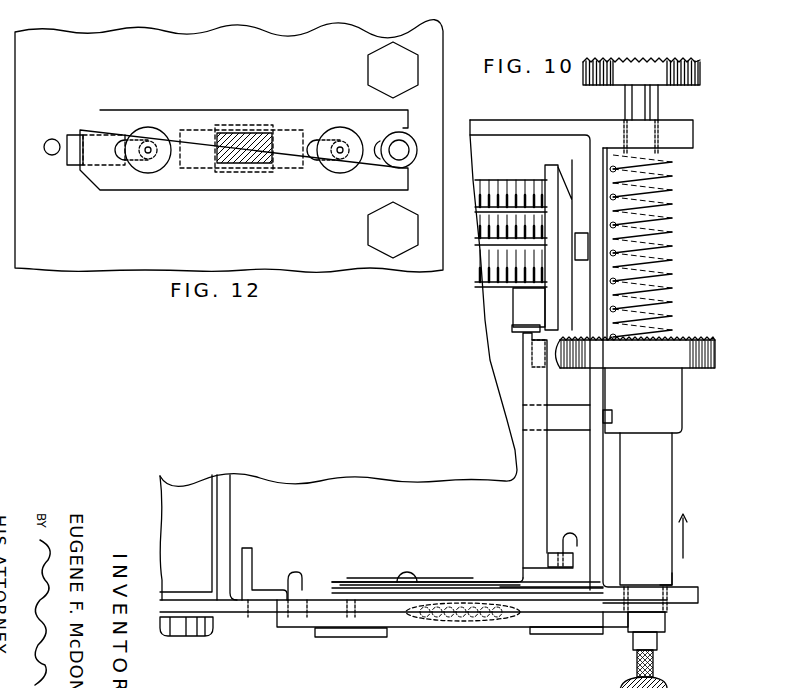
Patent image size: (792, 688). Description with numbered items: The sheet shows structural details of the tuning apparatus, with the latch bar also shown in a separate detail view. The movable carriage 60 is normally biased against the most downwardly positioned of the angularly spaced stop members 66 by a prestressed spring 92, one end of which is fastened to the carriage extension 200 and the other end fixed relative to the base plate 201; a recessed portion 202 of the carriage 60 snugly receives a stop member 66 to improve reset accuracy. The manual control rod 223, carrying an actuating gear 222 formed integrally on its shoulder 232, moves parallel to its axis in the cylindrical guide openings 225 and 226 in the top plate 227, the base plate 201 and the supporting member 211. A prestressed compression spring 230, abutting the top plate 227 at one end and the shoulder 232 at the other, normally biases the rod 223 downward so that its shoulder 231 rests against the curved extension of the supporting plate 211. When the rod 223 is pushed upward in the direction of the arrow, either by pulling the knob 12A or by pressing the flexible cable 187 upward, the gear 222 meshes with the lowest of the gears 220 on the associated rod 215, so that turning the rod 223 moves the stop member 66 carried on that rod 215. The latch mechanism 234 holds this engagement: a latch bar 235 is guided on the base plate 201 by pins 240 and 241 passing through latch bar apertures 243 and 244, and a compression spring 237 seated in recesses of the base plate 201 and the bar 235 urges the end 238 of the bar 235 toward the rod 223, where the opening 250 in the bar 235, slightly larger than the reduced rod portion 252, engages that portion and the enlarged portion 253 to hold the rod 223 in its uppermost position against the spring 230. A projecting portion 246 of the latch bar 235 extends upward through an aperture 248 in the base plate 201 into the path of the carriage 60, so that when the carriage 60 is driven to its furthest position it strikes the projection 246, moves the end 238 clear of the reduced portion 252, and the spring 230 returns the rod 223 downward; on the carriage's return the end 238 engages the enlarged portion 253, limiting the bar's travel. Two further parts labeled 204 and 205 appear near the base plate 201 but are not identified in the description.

In FIG. 10, the knob 12A is at (665, 57).
In FIG. 10, the cylindrical guide opening 225 is at (623, 120).
In FIG. 10, the top plate 227 is at (683, 127).
In FIG. 10, the gears 220 is at (571, 165).
In FIG. 10, the compression spring 230 is at (665, 259).
In FIG. 10, the actuating gear 222 is at (690, 338).
In FIG. 10, the shoulder 232 is at (740, 345).
In FIG. 10, the rod 215 is at (497, 288).
In FIG. 10, the stop member 66 is at (530, 330).
In FIG. 10, the recessed portion 202 is at (532, 360).
In FIG. 10, the movable carriage 60 is at (542, 466).
In FIG. 10, the supporting member 211 is at (593, 478).
In FIG. 10, the carriage extension 200 is at (558, 552).
In FIG. 10, the control rod 223 is at (663, 502).
In FIG. 10, the shoulder 231 is at (673, 583).
In FIG. 10, the cylindrical guide opening 226 is at (666, 618).
In FIG. 10, the enlarged portion 253 is at (658, 636).
In FIG. 10, the reduced portion 252 is at (653, 658).
In FIG. 10, the flexible cable 187 is at (657, 673).
In FIG. 10, the projecting portion 246 is at (247, 577).
In FIG. 10, the base plate 201 is at (333, 588).
In FIG. 10, the plate stack 204 is at (358, 578).
In FIG. 10, the dome contact 205 is at (409, 573).
In FIG. 10, the prestressed spring 92 is at (333, 590).
In FIG. 10, the aperture 248 is at (262, 612).
In FIG. 10, the pin 240 is at (345, 633).
In FIG. 10, the latch bar 235 is at (394, 622).
In FIG. 12, the compression spring 237 is at (222, 134).
In FIG. 10, the compression spring 237 is at (455, 622).
In FIG. 10, the latch mechanism 234 is at (521, 620).
In FIG. 10, the pin 241 is at (568, 632).
In FIG. 10, the end of latch bar 238 is at (618, 624).
In FIG. 12, the latch bar aperture 243 is at (120, 140).
In FIG. 12, the latch bar aperture 244 is at (315, 140).
In FIG. 12, the opening 250 is at (385, 140).